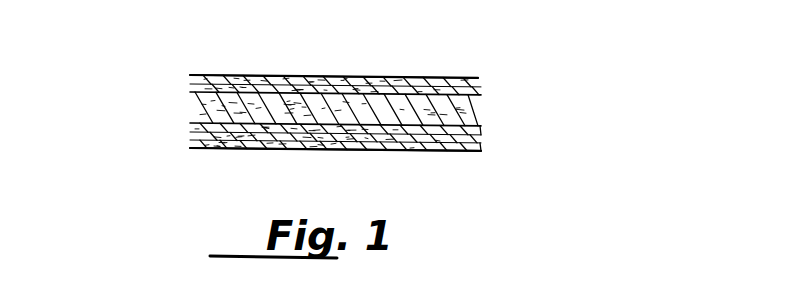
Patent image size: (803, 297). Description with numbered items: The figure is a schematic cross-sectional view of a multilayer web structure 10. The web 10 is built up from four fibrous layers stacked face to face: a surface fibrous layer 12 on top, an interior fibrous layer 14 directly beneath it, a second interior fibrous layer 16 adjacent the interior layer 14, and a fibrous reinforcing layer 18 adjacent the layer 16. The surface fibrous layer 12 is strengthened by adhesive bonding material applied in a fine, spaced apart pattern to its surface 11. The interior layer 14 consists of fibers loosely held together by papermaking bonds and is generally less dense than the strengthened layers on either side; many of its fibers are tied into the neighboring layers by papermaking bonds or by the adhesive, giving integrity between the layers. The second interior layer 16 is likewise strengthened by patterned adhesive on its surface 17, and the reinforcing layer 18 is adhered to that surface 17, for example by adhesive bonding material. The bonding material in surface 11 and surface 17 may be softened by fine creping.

The multilayer web structure 10 is at (165, 110).
The surface 11 is at (317, 76).
The surface fibrous layer 12 is at (449, 85).
The interior fibrous layer 14 is at (477, 109).
The second interior fibrous layer 16 is at (477, 133).
The surface 17 is at (187, 136).
The fibrous reinforcing layer 18 is at (472, 151).